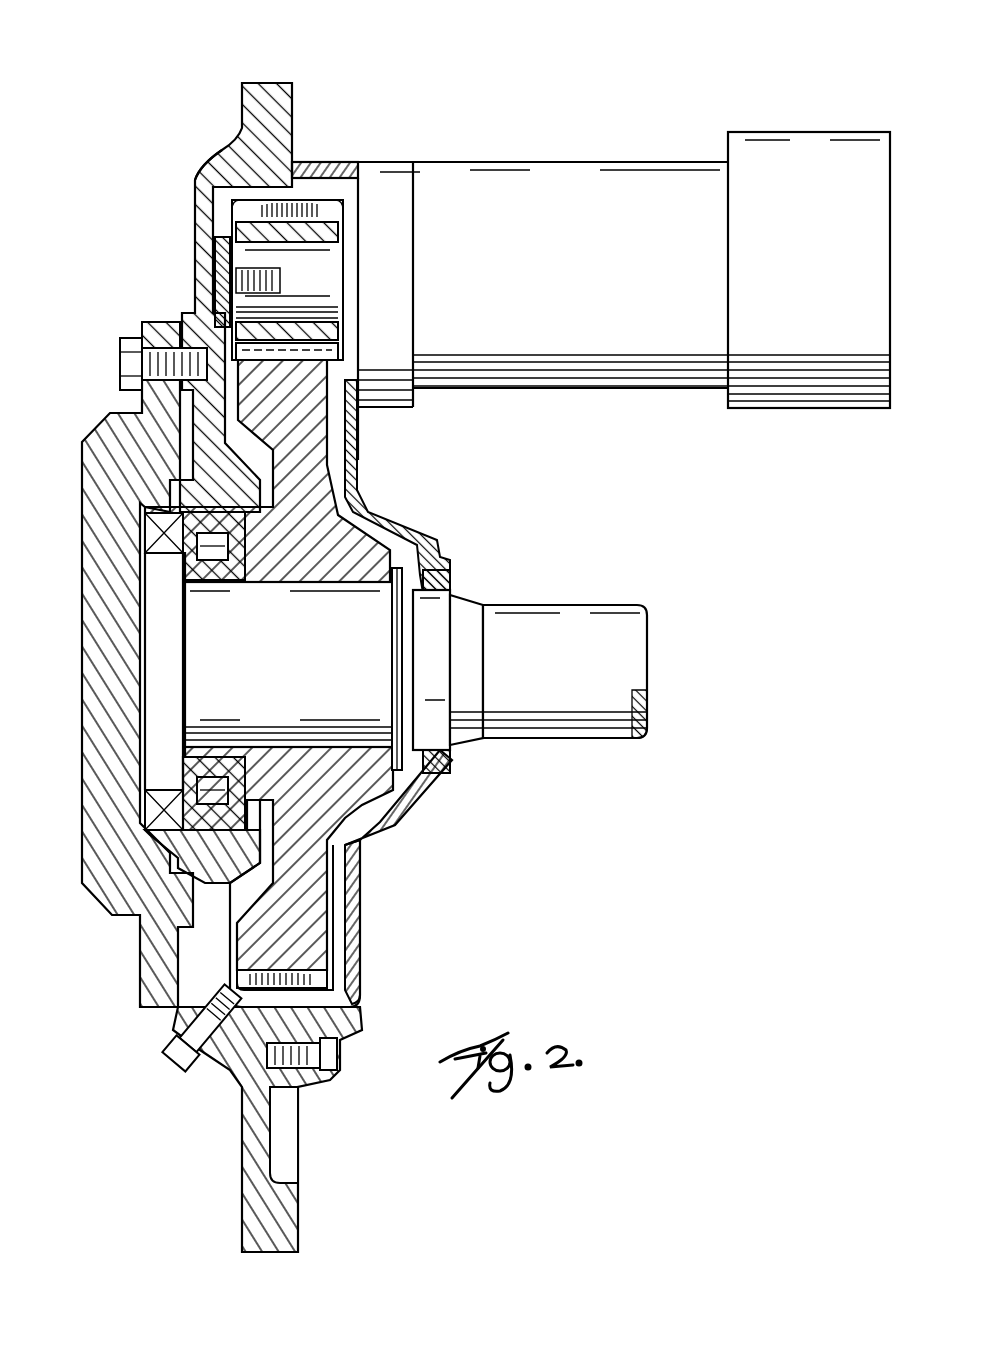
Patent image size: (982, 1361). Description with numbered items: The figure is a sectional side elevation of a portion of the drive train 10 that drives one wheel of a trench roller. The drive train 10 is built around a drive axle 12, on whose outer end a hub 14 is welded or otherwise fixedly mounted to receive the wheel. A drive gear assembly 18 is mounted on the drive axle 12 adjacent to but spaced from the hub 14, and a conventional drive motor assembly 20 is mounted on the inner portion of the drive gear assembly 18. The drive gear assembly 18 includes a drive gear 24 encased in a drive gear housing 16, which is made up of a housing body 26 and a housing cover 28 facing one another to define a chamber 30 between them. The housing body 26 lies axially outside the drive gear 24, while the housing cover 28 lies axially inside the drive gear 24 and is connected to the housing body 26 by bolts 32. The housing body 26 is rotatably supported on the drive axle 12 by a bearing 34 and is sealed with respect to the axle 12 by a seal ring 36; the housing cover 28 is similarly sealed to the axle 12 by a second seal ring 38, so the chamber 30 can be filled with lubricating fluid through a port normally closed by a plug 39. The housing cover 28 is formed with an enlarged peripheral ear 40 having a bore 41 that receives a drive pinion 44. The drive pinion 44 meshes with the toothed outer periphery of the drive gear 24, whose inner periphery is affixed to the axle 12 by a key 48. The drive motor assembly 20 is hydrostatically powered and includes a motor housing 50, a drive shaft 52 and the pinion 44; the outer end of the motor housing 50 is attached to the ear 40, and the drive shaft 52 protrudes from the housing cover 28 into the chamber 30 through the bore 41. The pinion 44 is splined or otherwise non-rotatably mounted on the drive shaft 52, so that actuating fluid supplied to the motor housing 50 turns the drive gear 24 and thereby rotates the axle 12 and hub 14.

The drive train 10 is at (540, 570).
The drive axle 12 is at (598, 700).
The hub 14 is at (84, 808).
The drive gear housing 16 is at (312, 1096).
The drive gear assembly 18 is at (250, 261).
The drive motor assembly 20 is at (808, 128).
The drive gear 24 is at (248, 398).
The housing body 26 is at (196, 222).
The housing cover 28 is at (350, 905).
The chamber 30 is at (330, 420).
The bolts 32 is at (337, 1055).
The bearing 34 is at (210, 588).
The seal ring 36 is at (160, 543).
The second seal ring 38 is at (443, 760).
The plug 39 is at (200, 1052).
The ear 40 is at (338, 162).
The bore 41 is at (205, 210).
The drive pinion 44 is at (327, 228).
The key 48 is at (378, 792).
The motor housing 50 is at (800, 408).
The drive shaft 52 is at (230, 258).